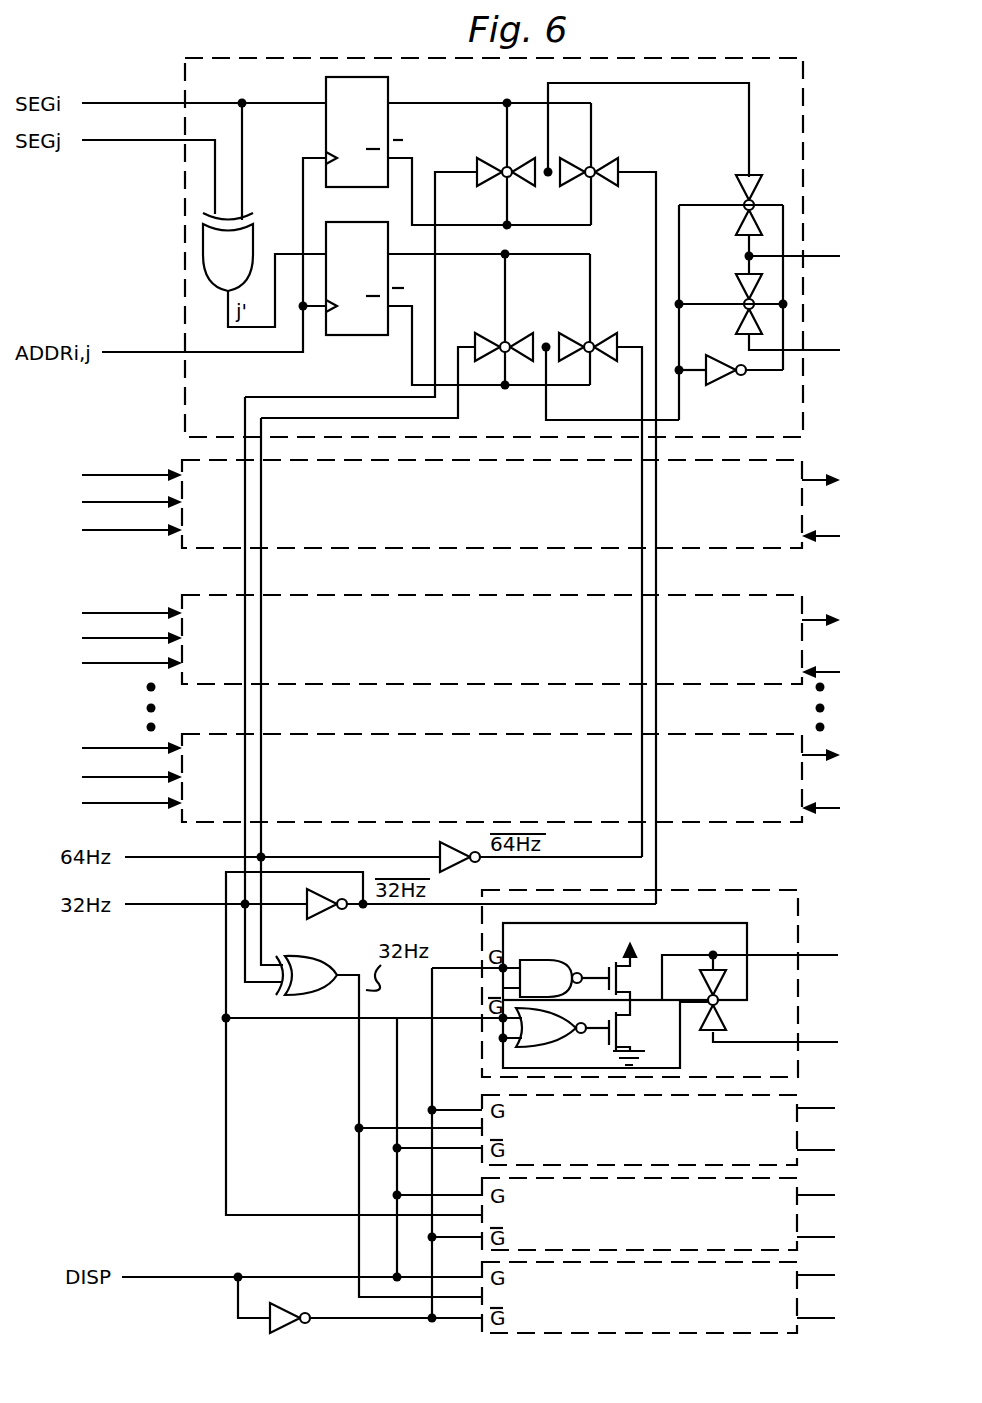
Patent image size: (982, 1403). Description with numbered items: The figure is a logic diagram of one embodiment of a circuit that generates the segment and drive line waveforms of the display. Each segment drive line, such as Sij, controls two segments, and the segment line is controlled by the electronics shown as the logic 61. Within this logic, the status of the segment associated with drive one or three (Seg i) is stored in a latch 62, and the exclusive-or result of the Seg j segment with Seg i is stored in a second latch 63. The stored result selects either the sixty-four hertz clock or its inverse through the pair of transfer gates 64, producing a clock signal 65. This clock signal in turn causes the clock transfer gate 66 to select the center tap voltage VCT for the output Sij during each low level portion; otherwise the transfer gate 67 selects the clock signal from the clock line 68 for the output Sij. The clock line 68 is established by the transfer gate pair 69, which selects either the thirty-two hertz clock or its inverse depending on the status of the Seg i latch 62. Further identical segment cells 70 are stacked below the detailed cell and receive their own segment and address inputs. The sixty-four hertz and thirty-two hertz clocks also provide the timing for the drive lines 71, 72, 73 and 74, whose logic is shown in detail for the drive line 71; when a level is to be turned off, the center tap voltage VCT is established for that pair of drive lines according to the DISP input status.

The segment line logic 61 is at (185, 86).
The latch 62 is at (326, 87).
The latch 63 is at (355, 336).
The pair of transfer gates 64 is at (486, 333).
The clock signal 65 is at (542, 412).
The clock transfer gate 66 is at (738, 298).
The transfer gate 67 is at (738, 193).
The clock line 68 is at (672, 84).
The transfer gate pair 69 is at (484, 162).
The segment drive cells 70 is at (212, 542).
The drive line 71 is at (735, 890).
The drive line 72 is at (482, 1107).
The drive line 73 is at (482, 1191).
The drive line 74 is at (482, 1274).